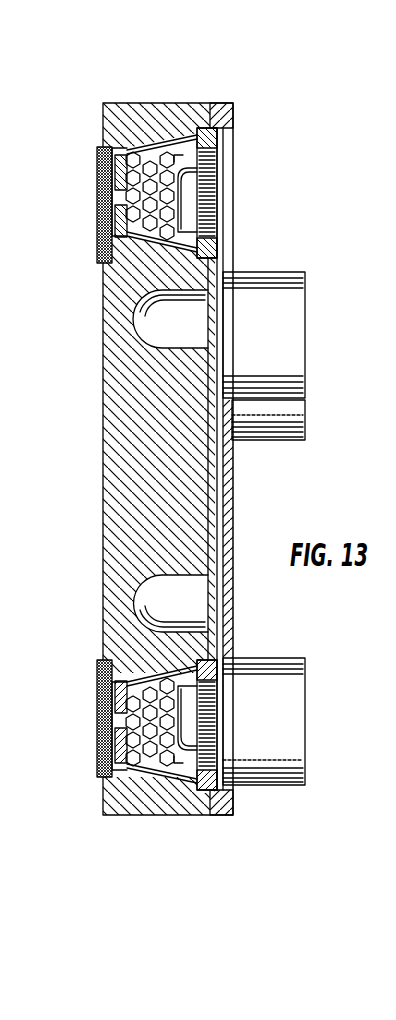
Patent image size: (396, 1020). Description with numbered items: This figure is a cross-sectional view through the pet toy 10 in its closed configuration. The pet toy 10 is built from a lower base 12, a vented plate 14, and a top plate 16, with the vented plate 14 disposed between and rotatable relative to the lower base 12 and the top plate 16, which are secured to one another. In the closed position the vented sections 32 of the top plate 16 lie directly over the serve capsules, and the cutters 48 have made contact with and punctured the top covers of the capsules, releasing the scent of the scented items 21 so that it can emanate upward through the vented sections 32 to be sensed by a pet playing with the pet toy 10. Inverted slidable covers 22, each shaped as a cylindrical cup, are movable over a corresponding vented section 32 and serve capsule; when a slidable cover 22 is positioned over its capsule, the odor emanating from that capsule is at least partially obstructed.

The pet toy 10 is at (262, 125).
The lower base 12 is at (108, 432).
The vented plate 14 is at (168, 158).
The top plate 16 is at (218, 112).
The scented items 21 is at (152, 167).
The inverted slidable cover 22 is at (298, 320).
The vented section 32 is at (215, 205).
The cutter 48 is at (190, 180).